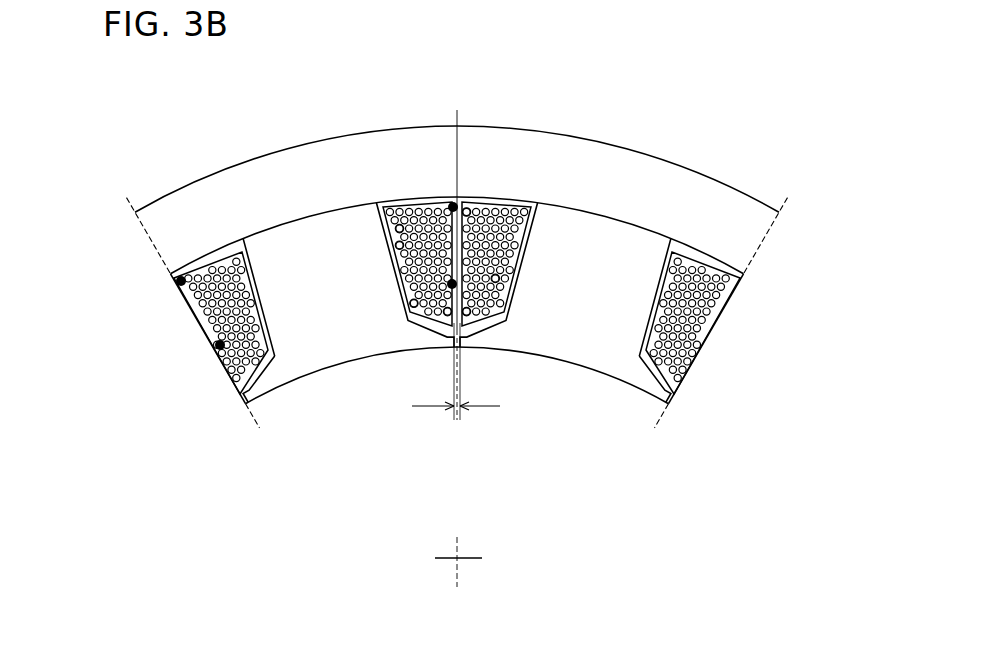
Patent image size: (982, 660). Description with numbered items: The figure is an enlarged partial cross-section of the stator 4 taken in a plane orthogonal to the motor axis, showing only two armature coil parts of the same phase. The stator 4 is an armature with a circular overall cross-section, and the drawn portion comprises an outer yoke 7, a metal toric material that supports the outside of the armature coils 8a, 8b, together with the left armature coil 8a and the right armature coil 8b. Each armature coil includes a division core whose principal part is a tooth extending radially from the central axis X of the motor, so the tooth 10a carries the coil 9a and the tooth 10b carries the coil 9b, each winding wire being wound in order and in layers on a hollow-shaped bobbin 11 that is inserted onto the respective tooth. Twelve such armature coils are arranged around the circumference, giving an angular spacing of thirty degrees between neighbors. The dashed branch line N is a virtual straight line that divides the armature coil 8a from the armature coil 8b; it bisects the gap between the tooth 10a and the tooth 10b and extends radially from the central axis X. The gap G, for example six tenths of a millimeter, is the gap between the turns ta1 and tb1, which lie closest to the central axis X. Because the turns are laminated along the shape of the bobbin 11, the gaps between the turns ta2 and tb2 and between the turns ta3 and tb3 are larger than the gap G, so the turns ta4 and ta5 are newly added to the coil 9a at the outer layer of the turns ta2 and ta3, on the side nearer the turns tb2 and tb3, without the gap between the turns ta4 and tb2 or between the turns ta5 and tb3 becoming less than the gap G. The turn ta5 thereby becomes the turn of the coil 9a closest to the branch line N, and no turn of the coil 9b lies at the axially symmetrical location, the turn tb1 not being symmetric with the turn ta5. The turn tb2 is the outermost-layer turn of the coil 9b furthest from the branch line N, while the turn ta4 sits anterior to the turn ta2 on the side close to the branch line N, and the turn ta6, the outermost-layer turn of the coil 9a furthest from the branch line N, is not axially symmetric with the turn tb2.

The stator 4 is at (703, 168).
The yoke 7 is at (165, 232).
The left armature coil 8a is at (307, 220).
The right armature coil 8b is at (608, 218).
The coil 9a is at (200, 308).
The coil 9b is at (705, 350).
The tooth 10a is at (335, 350).
The tooth 10b is at (580, 350).
The bobbin 11 is at (255, 373).
The branch line N is at (458, 110).
The central axis X is at (457, 558).
The gap G is at (456, 384).
The turn ta1 is at (447, 316).
The turn ta2 is at (449, 284).
The turn ta3 is at (396, 227).
The turn ta4 is at (411, 306).
The turn ta5 is at (452, 205).
The turn ta6 is at (396, 246).
The turn tb1 is at (467, 316).
The turn tb2 is at (499, 280).
The turn tb3 is at (469, 213).